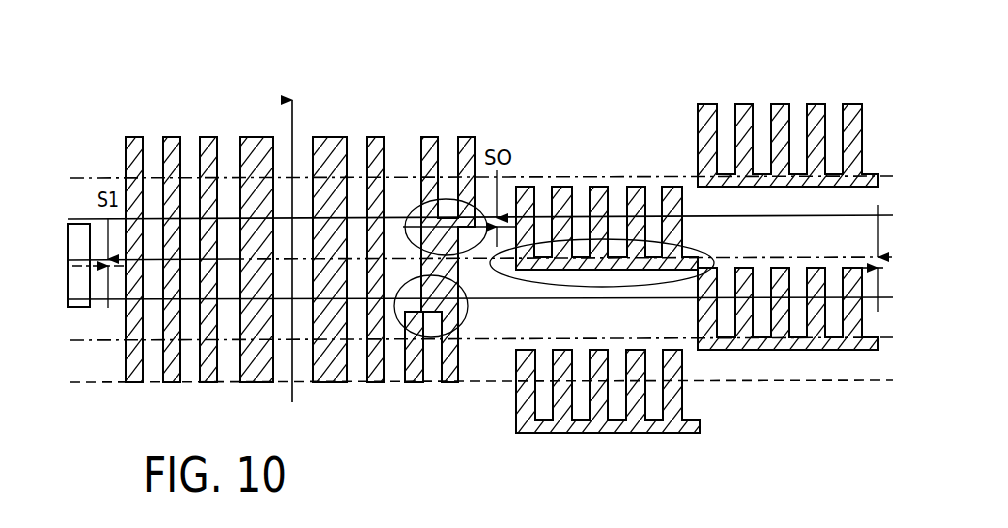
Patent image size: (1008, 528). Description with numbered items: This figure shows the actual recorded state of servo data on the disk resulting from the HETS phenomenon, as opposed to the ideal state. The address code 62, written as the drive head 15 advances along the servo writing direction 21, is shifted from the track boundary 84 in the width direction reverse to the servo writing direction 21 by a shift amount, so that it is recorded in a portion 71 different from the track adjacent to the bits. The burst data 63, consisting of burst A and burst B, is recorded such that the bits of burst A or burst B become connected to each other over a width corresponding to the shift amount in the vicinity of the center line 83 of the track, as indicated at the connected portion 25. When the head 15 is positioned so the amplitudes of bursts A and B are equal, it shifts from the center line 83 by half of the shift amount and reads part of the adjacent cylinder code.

The address code 62 is at (475, 70).
The burst data 63 is at (887, 68).
The servo writing direction 21 is at (290, 127).
The head 15 is at (70, 240).
The center line of the track 83 is at (592, 165).
The track boundary 84 is at (879, 212).
The portion different from a track adjacent to bits 71 is at (475, 254).
The connected burst bits portion 25 is at (643, 287).